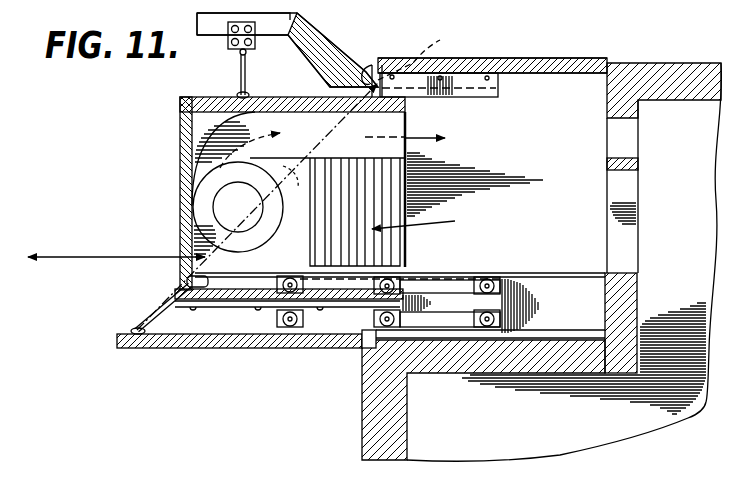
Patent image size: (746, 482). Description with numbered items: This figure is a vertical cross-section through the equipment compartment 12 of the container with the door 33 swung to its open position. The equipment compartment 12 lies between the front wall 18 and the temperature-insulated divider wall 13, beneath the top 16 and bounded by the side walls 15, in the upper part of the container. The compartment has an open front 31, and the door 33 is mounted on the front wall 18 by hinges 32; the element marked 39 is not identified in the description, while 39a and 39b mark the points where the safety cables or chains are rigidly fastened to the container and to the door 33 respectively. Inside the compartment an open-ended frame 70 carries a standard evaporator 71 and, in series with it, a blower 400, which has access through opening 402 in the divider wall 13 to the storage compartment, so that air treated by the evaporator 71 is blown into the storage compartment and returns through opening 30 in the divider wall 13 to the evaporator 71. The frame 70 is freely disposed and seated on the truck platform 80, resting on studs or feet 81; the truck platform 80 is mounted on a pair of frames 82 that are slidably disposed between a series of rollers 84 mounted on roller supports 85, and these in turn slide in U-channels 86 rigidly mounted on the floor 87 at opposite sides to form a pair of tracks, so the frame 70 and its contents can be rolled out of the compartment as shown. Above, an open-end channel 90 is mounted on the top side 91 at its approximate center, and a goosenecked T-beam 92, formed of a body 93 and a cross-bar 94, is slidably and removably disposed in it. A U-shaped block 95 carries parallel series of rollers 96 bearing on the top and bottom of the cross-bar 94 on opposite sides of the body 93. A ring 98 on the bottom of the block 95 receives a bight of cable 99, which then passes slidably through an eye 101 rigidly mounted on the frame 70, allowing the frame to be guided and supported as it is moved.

The equipment compartment 12 is at (575, 106).
The divider wall 13 is at (633, 300).
The side walls 15 is at (583, 422).
The top 16 is at (710, 62).
The front wall 18 is at (362, 432).
The opening 30 is at (638, 218).
The open front 31 is at (364, 65).
The hinges 32 is at (362, 350).
The door 33 is at (250, 349).
The pivot axis line 39 is at (257, 207).
The fastening point on container 39a is at (428, 54).
The fastening point on door 39b is at (130, 331).
The open-ended frame 70 is at (176, 141).
The evaporator 71 is at (306, 234).
The truck platform 80 is at (187, 282).
The studs or feet 81 is at (163, 326).
The frames 82 is at (226, 308).
The rollers 84 is at (490, 279).
The roller supports 85 is at (420, 290).
The U-channels 86 is at (548, 274).
The floor 87 is at (565, 336).
The open-end channel 90 is at (470, 88).
The top side 91 is at (566, 67).
The goosenecked T-beam 92 is at (318, 20).
The body 93 is at (197, 20).
The cross-bar 94 is at (205, 36).
The U-shaped block 95 is at (238, 20).
The rollers 96 is at (255, 24).
The ring 98 is at (240, 53).
The cable 99 is at (246, 72).
The eye 101 is at (249, 95).
The blower 400 is at (214, 204).
The opening 402 is at (630, 146).